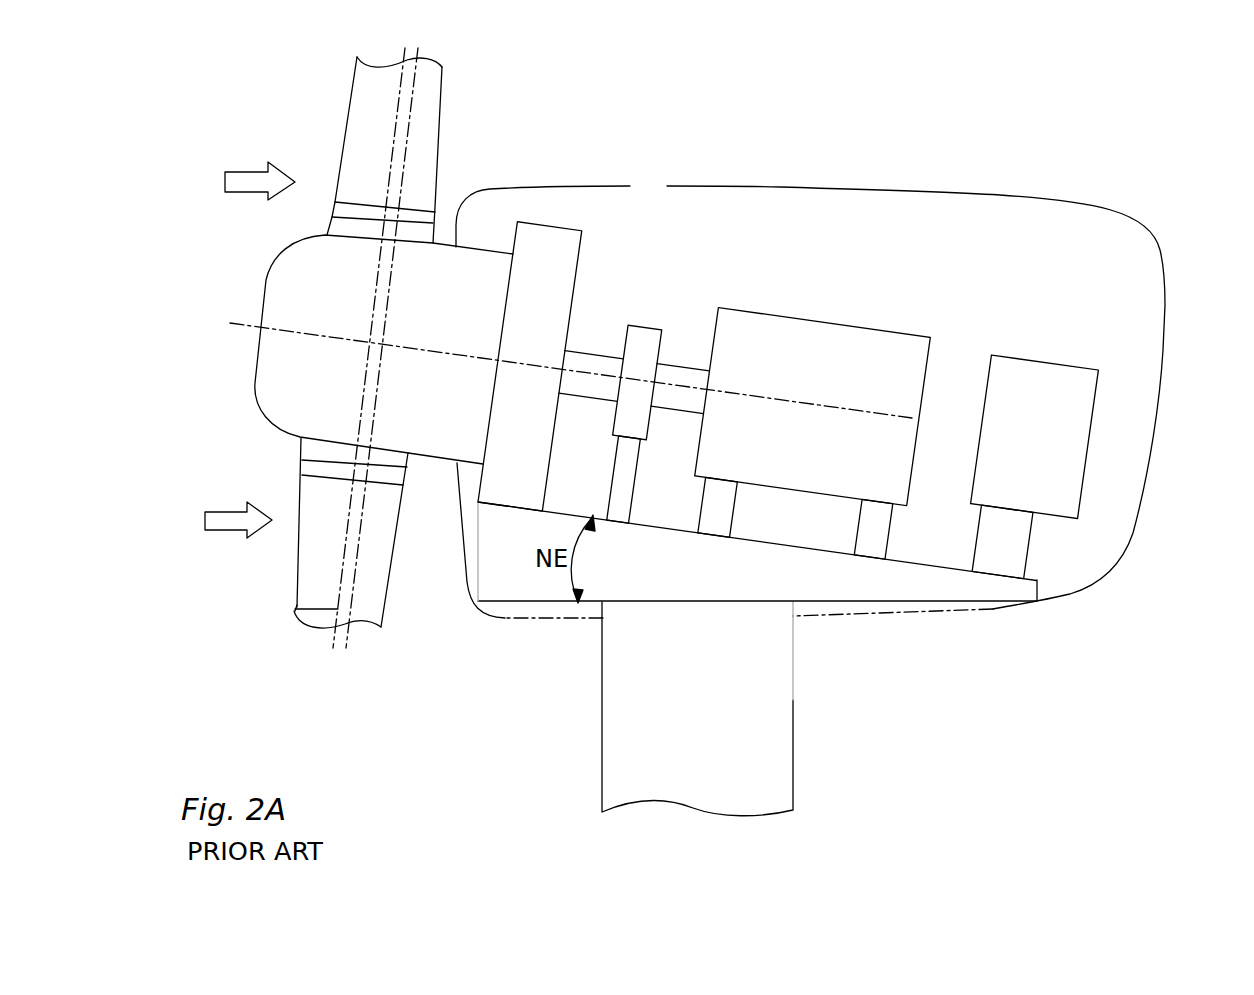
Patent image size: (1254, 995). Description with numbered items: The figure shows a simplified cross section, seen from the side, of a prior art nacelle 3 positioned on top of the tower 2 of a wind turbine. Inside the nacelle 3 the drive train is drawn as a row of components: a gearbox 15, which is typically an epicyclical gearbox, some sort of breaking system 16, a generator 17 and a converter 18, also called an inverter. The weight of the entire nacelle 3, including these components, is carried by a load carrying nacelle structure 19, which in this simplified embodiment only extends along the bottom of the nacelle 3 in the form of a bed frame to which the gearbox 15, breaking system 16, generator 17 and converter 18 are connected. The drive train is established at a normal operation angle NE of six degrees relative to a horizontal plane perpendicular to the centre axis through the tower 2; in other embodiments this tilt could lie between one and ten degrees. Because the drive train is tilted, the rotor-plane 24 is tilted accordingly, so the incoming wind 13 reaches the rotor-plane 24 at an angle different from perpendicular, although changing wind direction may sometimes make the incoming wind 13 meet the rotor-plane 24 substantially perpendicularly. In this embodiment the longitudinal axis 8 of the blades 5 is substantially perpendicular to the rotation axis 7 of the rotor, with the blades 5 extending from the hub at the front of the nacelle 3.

The tower 2 is at (768, 775).
The nacelle 3 is at (1193, 218).
The wind turbine blades 5 is at (417, 153).
The rotation axis 7 is at (237, 320).
The longitudinal axis of the blades 8 is at (294, 611).
The incoming wind 13 is at (248, 180).
The gearbox 15 is at (543, 255).
The breaking system 16 is at (645, 347).
The generator 17 is at (782, 357).
The converter 18 is at (1050, 402).
The load carrying nacelle structure 19 is at (875, 578).
The rotor-plane 24 is at (357, 572).